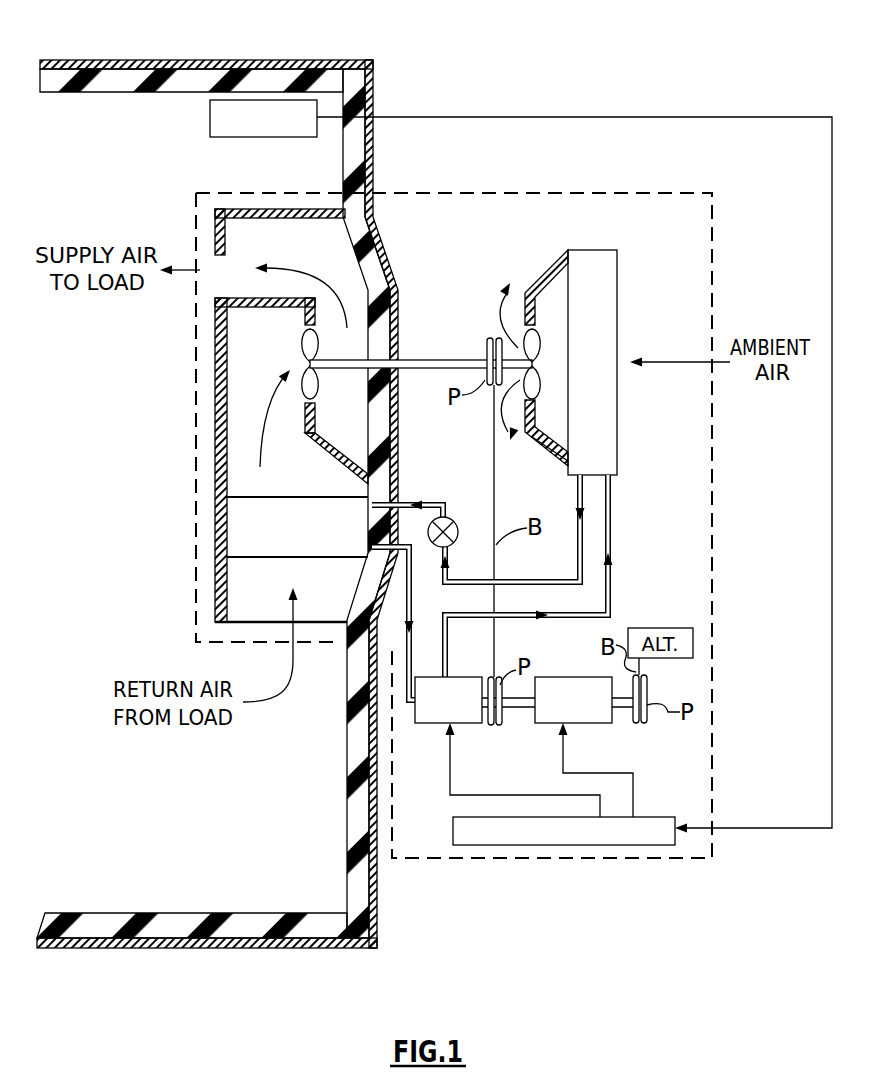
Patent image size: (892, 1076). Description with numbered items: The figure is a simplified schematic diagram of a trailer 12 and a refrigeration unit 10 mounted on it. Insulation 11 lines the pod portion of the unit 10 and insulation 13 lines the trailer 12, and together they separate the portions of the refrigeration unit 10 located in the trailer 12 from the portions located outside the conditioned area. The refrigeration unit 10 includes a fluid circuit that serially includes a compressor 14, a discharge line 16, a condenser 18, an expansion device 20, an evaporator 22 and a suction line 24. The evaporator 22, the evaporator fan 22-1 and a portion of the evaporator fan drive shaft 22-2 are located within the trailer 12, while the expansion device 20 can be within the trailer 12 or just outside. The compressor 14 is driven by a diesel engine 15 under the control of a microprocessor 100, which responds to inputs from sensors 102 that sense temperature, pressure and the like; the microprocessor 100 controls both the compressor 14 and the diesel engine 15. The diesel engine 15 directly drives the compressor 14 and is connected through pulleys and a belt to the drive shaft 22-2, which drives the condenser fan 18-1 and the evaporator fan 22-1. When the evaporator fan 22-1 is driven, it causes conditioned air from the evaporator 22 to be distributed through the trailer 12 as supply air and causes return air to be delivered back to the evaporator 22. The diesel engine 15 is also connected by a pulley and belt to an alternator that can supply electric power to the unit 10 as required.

The refrigeration unit 10 is at (712, 250).
The insulation 11 is at (388, 252).
The trailer 12 is at (75, 60).
The insulation 13 is at (172, 60).
The compressor 14 is at (438, 723).
The diesel engine 15 is at (590, 723).
The discharge line 16 is at (527, 615).
The condenser 18 is at (617, 450).
The condenser fan 18-1 is at (560, 470).
The expansion device 20 is at (445, 517).
The evaporator 22 is at (320, 497).
The evaporator fan 22-1 is at (308, 352).
The evaporator fan drive shaft 22-2 is at (430, 358).
The suction line 24 is at (412, 585).
The microprocessor 100 is at (605, 845).
The sensors 102 is at (210, 122).